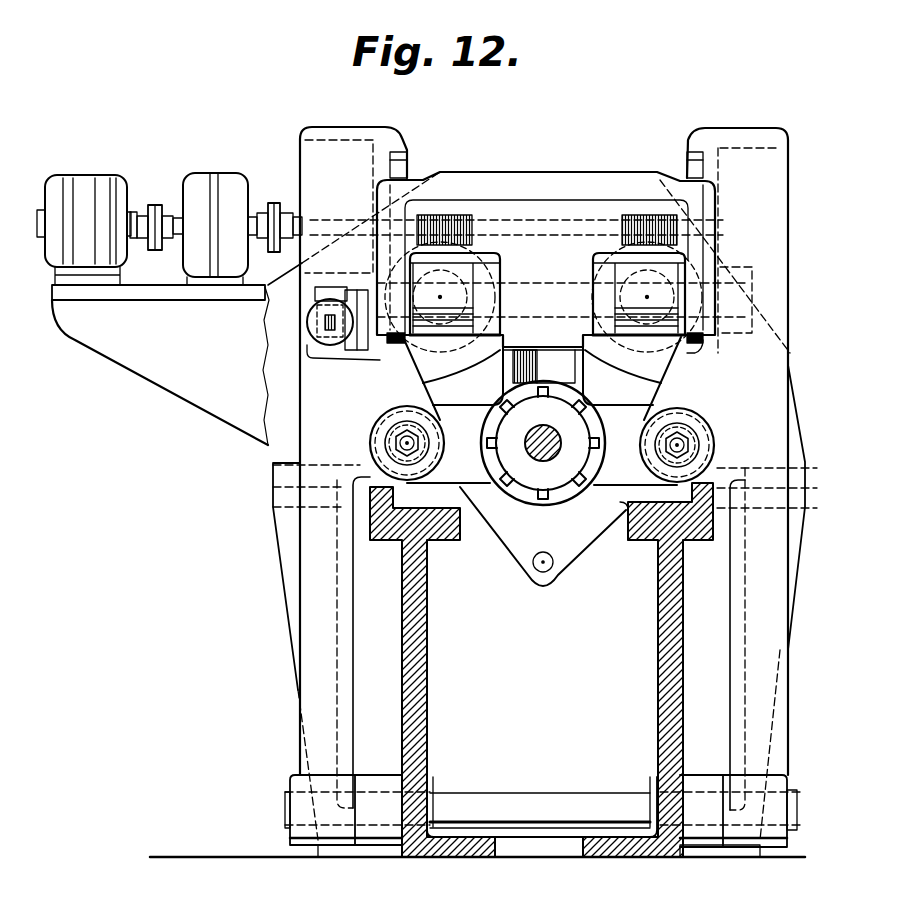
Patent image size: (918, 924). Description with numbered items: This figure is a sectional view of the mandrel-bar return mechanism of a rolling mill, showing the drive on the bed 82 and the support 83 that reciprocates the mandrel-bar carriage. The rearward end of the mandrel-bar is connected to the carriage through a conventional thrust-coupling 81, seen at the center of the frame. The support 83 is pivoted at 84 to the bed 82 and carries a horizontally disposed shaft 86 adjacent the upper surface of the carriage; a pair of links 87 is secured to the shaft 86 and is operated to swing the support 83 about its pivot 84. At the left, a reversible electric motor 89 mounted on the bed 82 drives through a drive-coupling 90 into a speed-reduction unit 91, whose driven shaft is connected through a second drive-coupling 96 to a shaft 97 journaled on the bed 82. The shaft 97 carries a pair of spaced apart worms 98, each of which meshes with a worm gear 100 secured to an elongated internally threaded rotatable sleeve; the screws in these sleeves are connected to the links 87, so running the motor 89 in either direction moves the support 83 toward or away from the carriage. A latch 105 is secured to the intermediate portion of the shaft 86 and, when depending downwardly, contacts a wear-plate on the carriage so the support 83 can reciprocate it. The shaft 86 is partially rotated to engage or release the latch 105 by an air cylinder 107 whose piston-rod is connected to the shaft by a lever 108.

The thrust-coupling 81 is at (540, 468).
The bed 82 is at (158, 372).
The support 83 is at (317, 690).
The pivot 84 is at (528, 807).
The horizontally disposed shaft 86 is at (322, 293).
The links 87 is at (432, 334).
The reversible electric motor 89 is at (88, 182).
The drive-coupling 90 is at (157, 205).
The speed-reduction unit 91 is at (209, 180).
The drive-coupling 96 is at (275, 203).
The shaft 97 is at (317, 222).
The worms 98 is at (437, 217).
The worm gear 100 is at (430, 380).
The latch 105 is at (572, 343).
The air cylinder 107 is at (307, 322).
The lever 108 is at (317, 287).